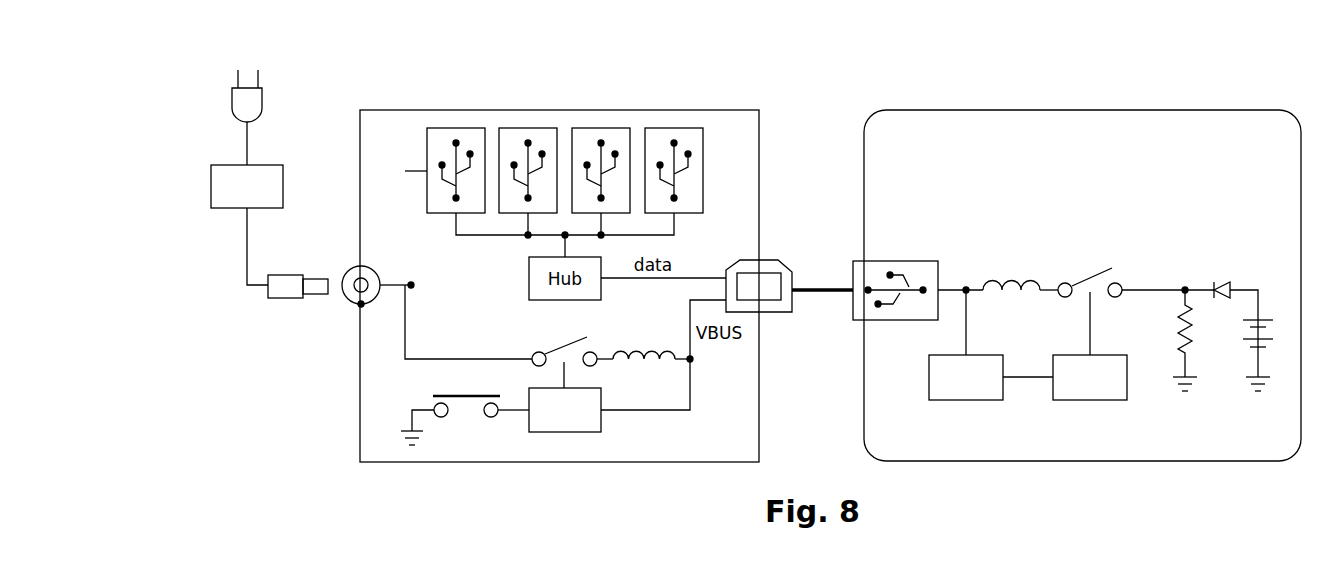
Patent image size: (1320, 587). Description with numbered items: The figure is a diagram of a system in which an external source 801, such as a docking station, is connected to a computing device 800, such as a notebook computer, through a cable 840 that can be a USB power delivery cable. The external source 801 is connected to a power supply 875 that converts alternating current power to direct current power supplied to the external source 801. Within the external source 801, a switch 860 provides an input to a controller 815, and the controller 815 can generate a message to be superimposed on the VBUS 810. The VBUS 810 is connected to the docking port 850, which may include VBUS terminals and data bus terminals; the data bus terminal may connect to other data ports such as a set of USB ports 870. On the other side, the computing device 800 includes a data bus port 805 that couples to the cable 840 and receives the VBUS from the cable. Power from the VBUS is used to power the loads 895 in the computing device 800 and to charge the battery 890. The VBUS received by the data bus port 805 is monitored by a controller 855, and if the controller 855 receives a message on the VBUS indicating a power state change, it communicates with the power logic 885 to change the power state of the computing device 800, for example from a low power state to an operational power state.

The computing device 800 is at (1083, 110).
The external source 801 is at (553, 110).
The data bus port 805 is at (895, 261).
The VBUS 810 is at (690, 335).
The controller 815 is at (551, 421).
The cable 840 is at (823, 290).
The docking port 850 is at (737, 260).
The controller 855 is at (952, 388).
The switch 860 is at (456, 394).
The USB ports 870 is at (676, 128).
The power supply 875 is at (233, 198).
The power logic 885 is at (1076, 388).
The battery 890 is at (1250, 326).
The loads 895 is at (1181, 330).